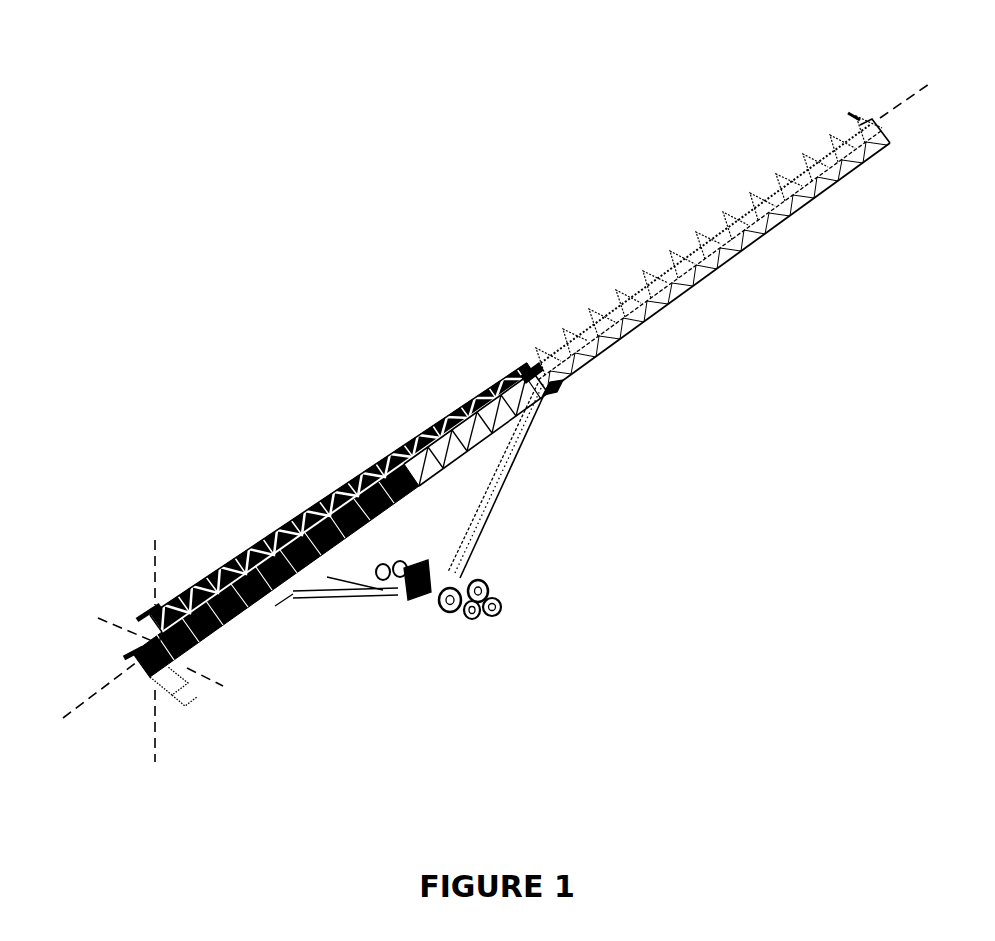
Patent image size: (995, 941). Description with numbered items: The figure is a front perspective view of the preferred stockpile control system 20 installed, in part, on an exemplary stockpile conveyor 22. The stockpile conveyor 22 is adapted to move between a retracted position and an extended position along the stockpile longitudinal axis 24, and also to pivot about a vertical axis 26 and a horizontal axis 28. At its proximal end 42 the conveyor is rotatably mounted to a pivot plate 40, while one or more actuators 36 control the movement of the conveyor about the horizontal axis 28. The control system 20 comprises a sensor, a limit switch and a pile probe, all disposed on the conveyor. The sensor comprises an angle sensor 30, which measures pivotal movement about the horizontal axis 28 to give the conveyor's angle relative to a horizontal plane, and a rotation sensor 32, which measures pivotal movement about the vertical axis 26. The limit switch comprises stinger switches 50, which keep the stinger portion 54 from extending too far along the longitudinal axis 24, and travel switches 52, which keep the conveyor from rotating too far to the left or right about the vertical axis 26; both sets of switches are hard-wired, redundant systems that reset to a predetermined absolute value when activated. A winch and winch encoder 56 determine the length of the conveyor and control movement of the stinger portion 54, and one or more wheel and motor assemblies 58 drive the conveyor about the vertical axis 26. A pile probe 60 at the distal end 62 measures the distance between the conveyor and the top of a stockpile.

The stockpile control system 20 is at (432, 374).
The stockpile conveyor 22 is at (552, 347).
The stockpile longitudinal axis 24 is at (70, 718).
The vertical axis 26 is at (152, 553).
The horizontal axis 28 is at (108, 623).
The angle sensor 30 is at (257, 618).
The rotation sensor 32 is at (169, 680).
The actuators 36 is at (497, 508).
The pivot plate 40 is at (153, 690).
The proximal end 42 is at (115, 656).
The stinger switches 50 is at (242, 624).
The travel switches 52 is at (376, 560).
The stinger portion 54 is at (697, 240).
The winch encoder 56 is at (186, 704).
The wheel and motor assemblies 58 is at (500, 588).
The pile probe 60 is at (898, 133).
The distal end 62 is at (844, 114).